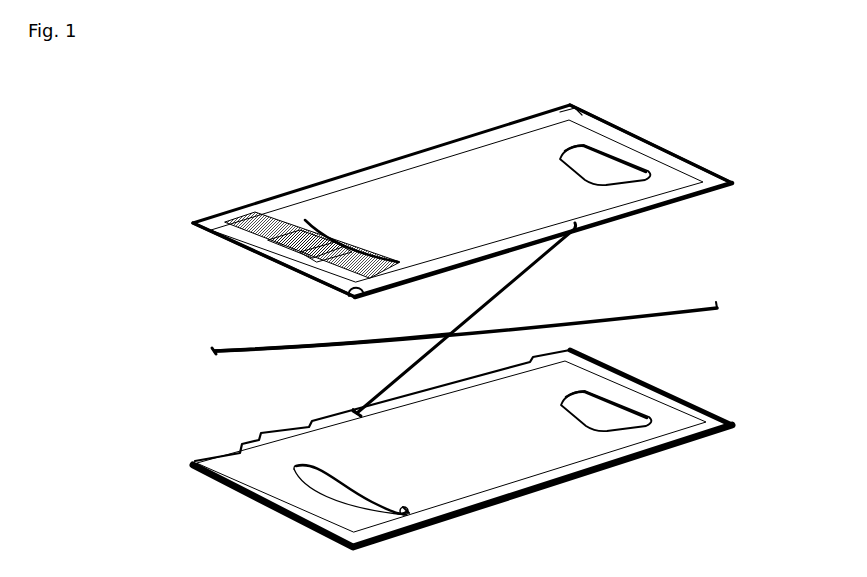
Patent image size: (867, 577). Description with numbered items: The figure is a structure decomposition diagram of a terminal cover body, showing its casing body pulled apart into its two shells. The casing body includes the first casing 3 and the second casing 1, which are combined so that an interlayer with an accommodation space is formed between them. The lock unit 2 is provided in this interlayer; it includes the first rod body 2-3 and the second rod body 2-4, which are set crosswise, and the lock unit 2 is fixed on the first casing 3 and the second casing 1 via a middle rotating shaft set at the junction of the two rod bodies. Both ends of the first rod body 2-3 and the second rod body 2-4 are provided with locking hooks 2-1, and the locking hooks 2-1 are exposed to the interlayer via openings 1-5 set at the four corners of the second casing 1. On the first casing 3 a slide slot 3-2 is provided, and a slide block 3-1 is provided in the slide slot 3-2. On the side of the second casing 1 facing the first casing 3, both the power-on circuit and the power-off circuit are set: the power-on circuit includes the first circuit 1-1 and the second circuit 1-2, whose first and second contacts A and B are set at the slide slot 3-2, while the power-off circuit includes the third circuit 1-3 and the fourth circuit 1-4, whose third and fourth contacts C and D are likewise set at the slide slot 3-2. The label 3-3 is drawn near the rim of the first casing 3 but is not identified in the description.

The second casing 1 is at (353, 170).
The first circuit 1-1 is at (283, 228).
The second circuit 1-2 is at (285, 250).
The third circuit 1-3 is at (312, 265).
The fourth circuit 1-4 is at (380, 268).
The opening 1-5 is at (565, 120).
The lock unit 2 is at (523, 292).
The locking hook 2-1 is at (215, 351).
The first rod body 2-3 is at (255, 352).
The second rod body 2-4 is at (548, 263).
The first casing 3 is at (738, 426).
The slide block 3-1 is at (414, 500).
The slide slot 3-2 is at (355, 487).
The rim connecting point 3-3 is at (464, 338).